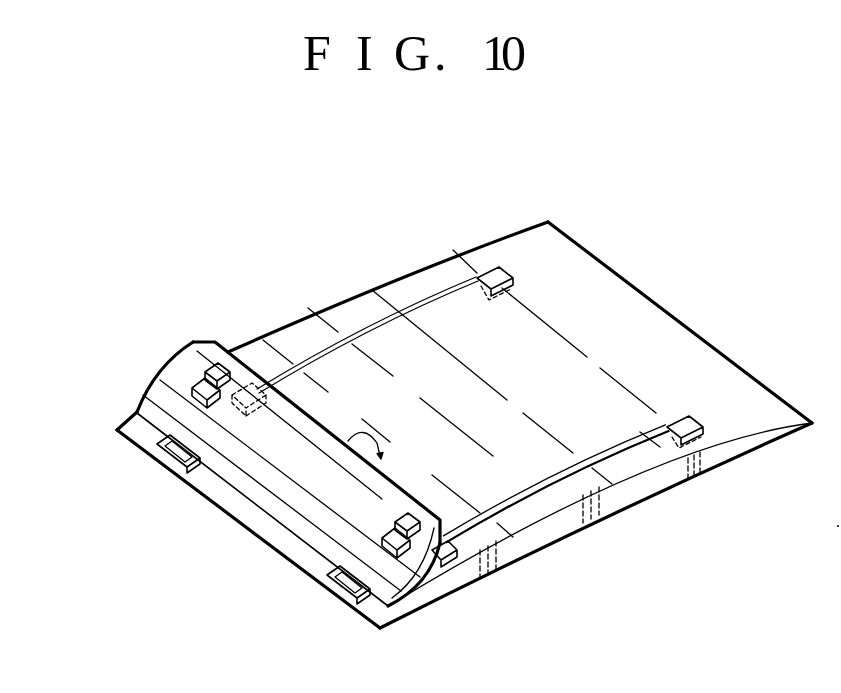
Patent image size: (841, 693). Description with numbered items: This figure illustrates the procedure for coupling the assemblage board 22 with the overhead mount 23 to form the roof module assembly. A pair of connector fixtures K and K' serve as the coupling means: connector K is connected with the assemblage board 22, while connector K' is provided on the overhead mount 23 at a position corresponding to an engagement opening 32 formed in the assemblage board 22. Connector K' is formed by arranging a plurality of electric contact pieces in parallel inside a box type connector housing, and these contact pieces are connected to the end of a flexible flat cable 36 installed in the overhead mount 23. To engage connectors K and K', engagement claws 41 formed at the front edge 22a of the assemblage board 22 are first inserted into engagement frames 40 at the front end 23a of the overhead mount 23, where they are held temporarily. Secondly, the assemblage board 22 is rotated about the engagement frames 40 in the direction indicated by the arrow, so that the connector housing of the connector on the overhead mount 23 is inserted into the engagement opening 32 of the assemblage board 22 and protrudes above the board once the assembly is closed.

The assemblage board 22 is at (143, 398).
The front edge of the assemblage board 22a is at (248, 495).
The overhead mount 23 is at (468, 247).
The front end of the overhead mount 23a is at (257, 540).
The engagement opening 32 is at (210, 362).
The flexible flat cable 36 is at (372, 322).
The engagement frames 40 is at (155, 440).
The engagement claws 41 is at (176, 458).
The connector fixture K is at (269, 503).
The connector fixture K' is at (375, 517).